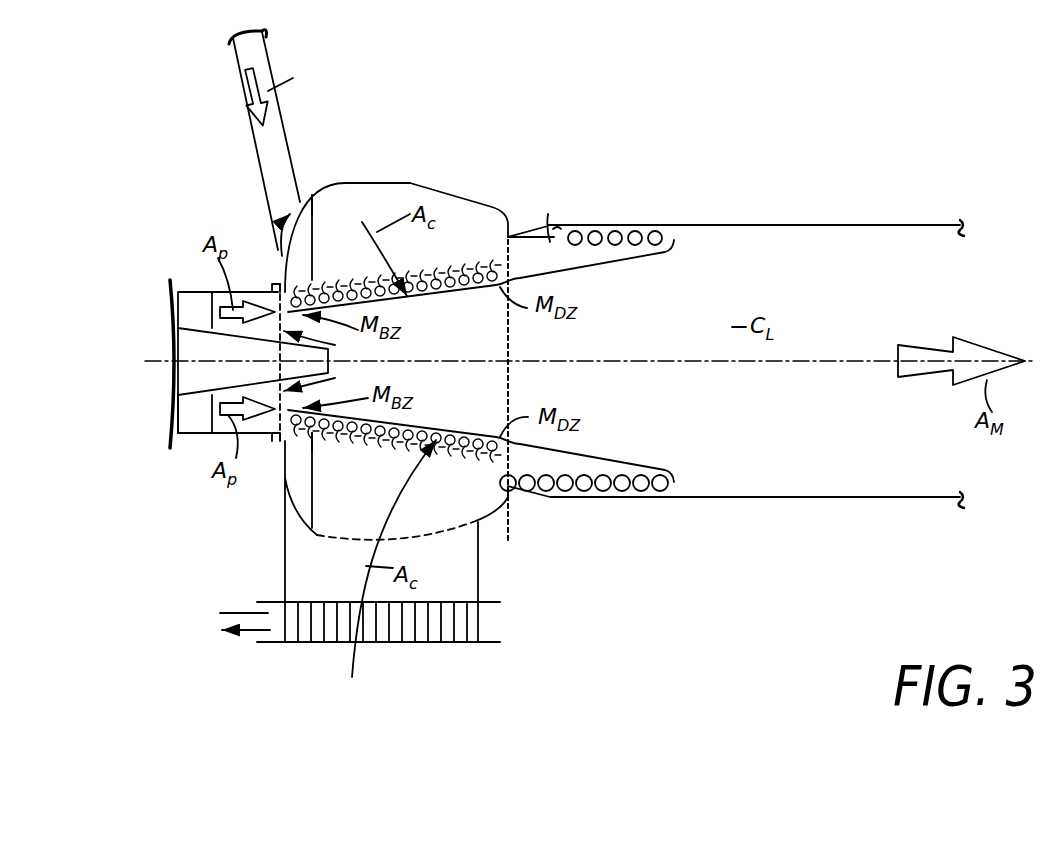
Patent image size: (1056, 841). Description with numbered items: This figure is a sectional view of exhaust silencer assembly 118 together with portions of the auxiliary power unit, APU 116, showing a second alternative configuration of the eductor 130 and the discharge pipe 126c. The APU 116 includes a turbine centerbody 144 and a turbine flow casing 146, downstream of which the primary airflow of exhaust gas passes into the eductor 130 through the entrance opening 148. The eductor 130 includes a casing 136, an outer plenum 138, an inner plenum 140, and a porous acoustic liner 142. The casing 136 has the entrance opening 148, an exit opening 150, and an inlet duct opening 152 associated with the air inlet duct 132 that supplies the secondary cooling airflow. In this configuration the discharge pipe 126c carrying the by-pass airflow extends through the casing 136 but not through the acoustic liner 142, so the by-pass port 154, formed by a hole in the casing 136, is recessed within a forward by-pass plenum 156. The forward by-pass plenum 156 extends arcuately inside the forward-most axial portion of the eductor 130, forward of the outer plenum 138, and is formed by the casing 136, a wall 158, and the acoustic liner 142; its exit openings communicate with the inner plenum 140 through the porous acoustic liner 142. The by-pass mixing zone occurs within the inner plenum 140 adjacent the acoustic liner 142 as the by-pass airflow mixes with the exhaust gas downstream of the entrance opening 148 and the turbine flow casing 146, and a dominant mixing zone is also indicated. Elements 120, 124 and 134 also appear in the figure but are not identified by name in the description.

The APU 116 is at (108, 283).
The exhaust silencer assembly 118 is at (607, 154).
The liner outer wall 120 is at (795, 498).
The inlet face 124 is at (160, 383).
The discharge pipe 126c is at (250, 120).
The eductor 130 is at (497, 194).
The air inlet duct 132 is at (285, 553).
The heat exchanger 134 is at (438, 618).
The casing 136 is at (395, 182).
The outer plenum 138 is at (396, 362).
The inner plenum 140 is at (473, 390).
The acoustic liner 142 is at (455, 248).
The turbine centerbody 144 is at (186, 346).
The turbine flow casing 146 is at (250, 433).
The entrance opening 148 is at (326, 361).
The exit opening 150 is at (514, 373).
The inlet duct opening 152 is at (403, 537).
The by-pass port 154 is at (277, 258).
The forward by-pass plenum 156 is at (300, 251).
The wall 158 is at (313, 222).